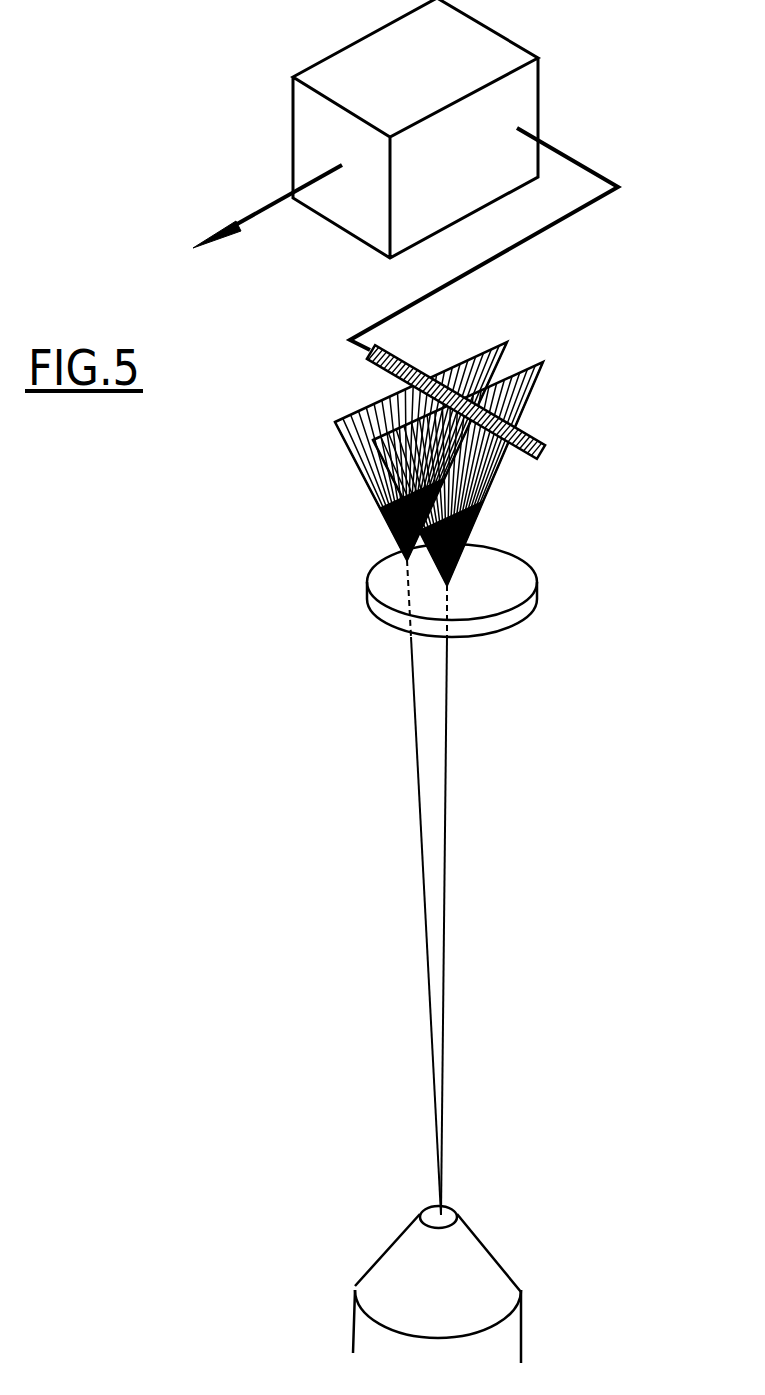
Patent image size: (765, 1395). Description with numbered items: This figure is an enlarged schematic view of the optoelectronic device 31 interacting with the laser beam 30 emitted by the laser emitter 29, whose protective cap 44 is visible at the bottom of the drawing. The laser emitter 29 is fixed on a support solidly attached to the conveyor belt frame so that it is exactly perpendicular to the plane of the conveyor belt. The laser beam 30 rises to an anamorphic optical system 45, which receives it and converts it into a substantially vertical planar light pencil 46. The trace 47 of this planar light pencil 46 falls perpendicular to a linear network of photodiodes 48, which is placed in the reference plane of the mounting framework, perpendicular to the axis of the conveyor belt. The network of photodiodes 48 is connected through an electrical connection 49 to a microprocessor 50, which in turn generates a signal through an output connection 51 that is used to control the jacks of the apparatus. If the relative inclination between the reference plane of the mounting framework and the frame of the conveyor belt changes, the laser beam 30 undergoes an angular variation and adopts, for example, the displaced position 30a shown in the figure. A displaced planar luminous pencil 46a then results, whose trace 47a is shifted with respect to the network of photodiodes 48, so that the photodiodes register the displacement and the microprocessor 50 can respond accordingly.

The laser emitter 29 is at (356, 1271).
The laser beam 30 is at (447, 757).
The displaced position of the laser beam 30a is at (413, 745).
The optoelectronic device 31 is at (566, 330).
The protective cap 44 is at (352, 1323).
The anamorphic optical system 45 is at (538, 583).
The planar light pencil 46 is at (417, 475).
The displaced planar luminous pencil 46a is at (363, 457).
The trace of the planar light pencil 47 is at (518, 367).
The displaced trace 47a is at (358, 408).
The linear network of photodiodes 48 is at (538, 445).
The electrical connection 49 is at (593, 167).
The microprocessor 50 is at (523, 85).
The output connection 51 is at (262, 210).